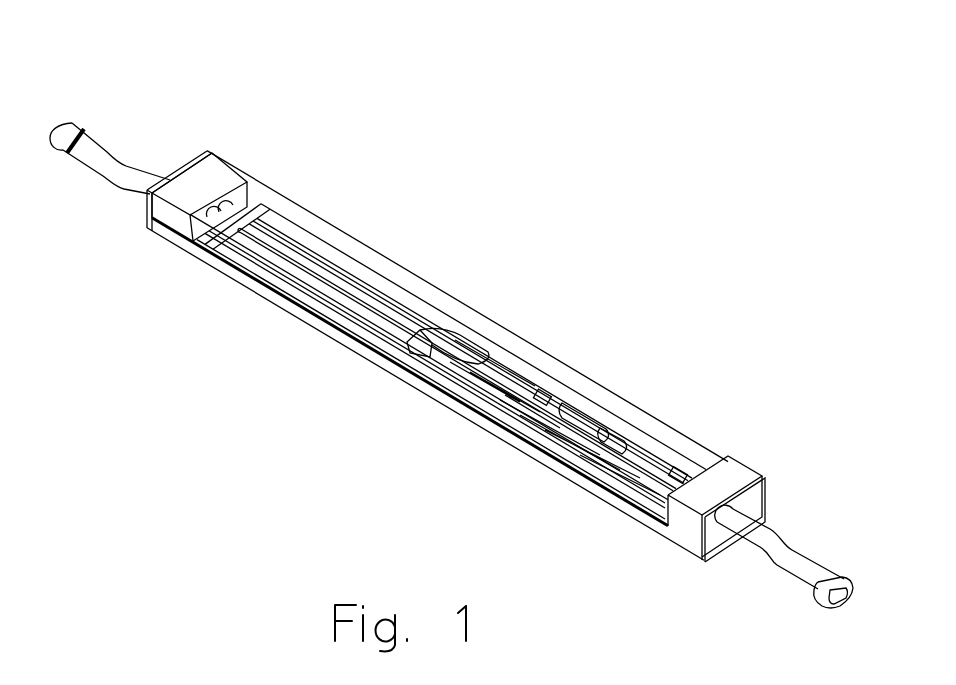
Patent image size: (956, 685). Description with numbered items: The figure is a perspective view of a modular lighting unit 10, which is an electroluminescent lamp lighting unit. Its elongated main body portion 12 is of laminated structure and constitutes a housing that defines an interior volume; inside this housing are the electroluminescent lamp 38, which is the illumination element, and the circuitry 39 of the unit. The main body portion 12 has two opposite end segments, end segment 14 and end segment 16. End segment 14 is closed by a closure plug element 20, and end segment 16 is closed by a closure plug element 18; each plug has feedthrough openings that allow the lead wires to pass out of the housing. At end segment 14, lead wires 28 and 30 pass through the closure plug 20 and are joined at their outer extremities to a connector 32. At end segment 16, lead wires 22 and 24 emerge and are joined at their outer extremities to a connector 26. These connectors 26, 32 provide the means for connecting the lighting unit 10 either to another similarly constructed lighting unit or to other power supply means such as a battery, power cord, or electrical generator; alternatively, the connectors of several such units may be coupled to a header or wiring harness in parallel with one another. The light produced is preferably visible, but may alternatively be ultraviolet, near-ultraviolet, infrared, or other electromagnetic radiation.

The modular lighting unit 10 is at (394, 158).
The main body portion 12 is at (478, 310).
The end segment 14 is at (262, 188).
The end segment 16 is at (727, 481).
The closure plug element 18 is at (767, 499).
The closure plug element 20 is at (193, 193).
The lead wire 22 is at (805, 557).
The lead wire 24 is at (788, 585).
The connector 26 is at (837, 588).
The lead wire 28 is at (110, 158).
The lead wire 30 is at (113, 183).
The connector 32 is at (70, 126).
The electroluminescent lamp 38 is at (320, 272).
The circuitry 39 is at (581, 417).